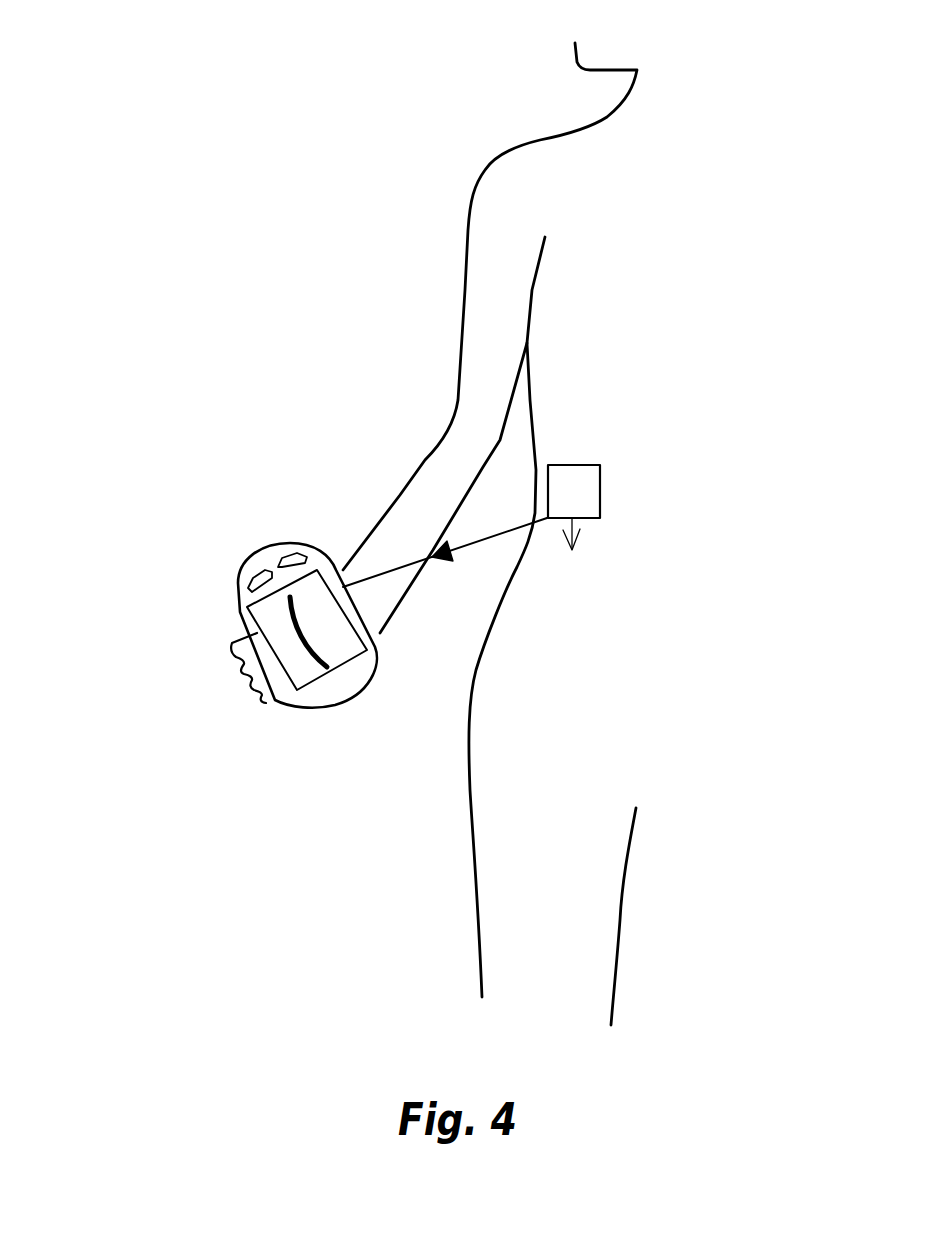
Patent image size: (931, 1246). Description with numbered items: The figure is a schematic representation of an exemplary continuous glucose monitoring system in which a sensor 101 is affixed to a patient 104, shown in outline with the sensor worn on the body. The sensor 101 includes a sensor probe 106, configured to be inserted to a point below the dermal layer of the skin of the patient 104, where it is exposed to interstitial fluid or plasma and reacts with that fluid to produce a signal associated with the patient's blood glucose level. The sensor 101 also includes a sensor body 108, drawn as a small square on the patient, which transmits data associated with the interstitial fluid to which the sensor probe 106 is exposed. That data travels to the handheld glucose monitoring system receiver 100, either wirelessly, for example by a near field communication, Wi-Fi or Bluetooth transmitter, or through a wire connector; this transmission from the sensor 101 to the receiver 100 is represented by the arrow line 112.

The glucose monitoring system receiver 100 is at (234, 604).
The sensor 101 is at (662, 526).
The patient 104 is at (487, 133).
The sensor probe 106 is at (572, 550).
The sensor body 108 is at (600, 505).
The arrow line 112 is at (410, 563).